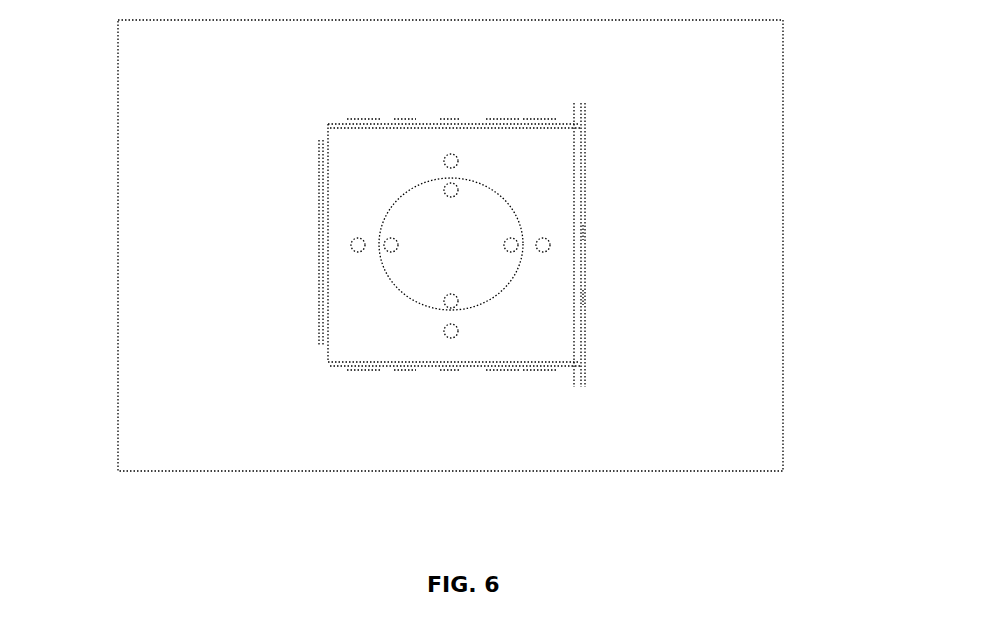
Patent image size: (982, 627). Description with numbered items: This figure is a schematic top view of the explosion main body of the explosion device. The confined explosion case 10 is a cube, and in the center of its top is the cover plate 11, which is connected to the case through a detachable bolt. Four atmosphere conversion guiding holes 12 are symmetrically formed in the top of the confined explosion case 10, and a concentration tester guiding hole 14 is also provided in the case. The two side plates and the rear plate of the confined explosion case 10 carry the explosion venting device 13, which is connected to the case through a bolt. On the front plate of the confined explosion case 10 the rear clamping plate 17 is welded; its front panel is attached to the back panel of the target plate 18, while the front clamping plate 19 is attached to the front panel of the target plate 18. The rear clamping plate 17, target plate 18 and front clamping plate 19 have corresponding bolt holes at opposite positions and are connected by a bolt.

The confined explosion case 10 is at (342, 155).
The cover plate 11 is at (422, 193).
The atmosphere conversion guiding hole 12 is at (445, 330).
The explosion venting device 13 is at (328, 263).
The concentration tester guiding hole 14 is at (328, 124).
The rear clamping plate 17 is at (576, 170).
The target plate 18 is at (588, 233).
The front clamping plate 19 is at (588, 298).